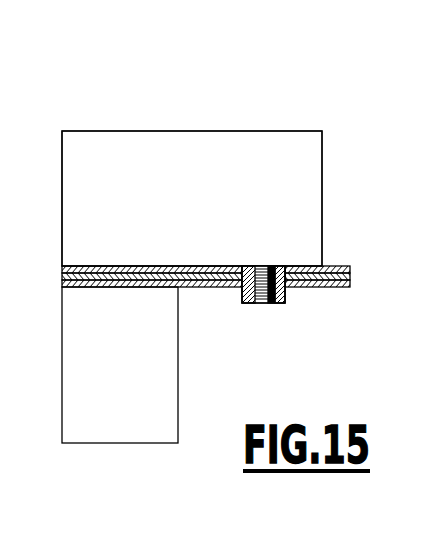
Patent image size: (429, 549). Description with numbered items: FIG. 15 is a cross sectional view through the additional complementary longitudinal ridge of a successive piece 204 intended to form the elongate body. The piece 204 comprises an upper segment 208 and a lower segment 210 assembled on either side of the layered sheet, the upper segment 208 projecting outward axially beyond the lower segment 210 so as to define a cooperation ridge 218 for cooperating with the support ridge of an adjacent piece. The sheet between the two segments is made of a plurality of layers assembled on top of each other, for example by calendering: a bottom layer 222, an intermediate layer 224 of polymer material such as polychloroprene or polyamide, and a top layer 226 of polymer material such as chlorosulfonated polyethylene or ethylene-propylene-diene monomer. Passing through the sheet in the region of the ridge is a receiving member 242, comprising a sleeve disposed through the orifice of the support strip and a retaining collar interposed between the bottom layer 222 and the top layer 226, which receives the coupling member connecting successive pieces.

The longitudinal element 204 is at (183, 100).
The upper segment 208 is at (97, 152).
The cooperation ridge 218 is at (280, 160).
The lower segment 210 is at (110, 423).
The top layer 226 is at (336, 266).
The intermediate layer 224 is at (350, 281).
The bottom layer 222 is at (333, 283).
The receiving member 242 is at (246, 292).